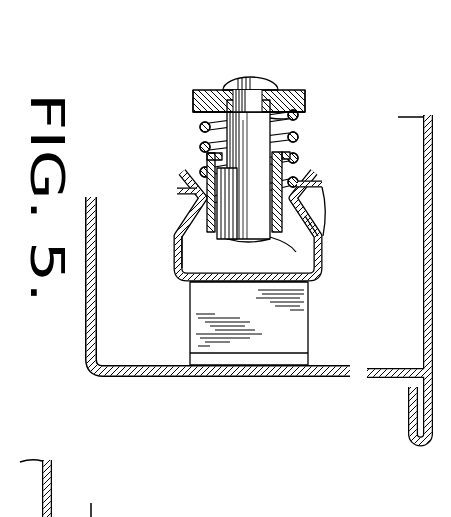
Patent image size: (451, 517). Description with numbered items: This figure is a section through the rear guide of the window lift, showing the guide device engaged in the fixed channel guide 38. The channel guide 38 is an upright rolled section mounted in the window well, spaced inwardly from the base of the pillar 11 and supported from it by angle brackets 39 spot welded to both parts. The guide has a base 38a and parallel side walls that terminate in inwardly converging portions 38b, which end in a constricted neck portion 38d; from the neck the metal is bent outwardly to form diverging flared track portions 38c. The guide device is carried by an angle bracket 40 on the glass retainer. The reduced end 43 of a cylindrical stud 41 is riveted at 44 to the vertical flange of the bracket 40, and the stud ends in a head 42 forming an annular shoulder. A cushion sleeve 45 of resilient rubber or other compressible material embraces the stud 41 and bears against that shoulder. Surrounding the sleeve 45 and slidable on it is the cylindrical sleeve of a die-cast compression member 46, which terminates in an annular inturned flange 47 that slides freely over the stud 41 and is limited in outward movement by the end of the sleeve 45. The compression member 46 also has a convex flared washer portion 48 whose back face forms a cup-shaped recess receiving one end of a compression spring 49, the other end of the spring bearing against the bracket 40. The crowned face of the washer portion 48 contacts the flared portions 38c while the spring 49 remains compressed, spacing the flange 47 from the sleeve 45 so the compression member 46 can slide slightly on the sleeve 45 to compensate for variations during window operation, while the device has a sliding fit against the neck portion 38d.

The pillar 11 is at (278, 377).
The channel guide 38 is at (239, 245).
The base 38a is at (237, 270).
The inwardly converging portions 38b is at (185, 232).
The flared track portions 38c is at (323, 182).
The constricted neck portion 38d is at (196, 200).
The angle bracket 39 is at (306, 333).
The angle bracket 40 is at (305, 96).
The cylindrical stud 41 is at (295, 127).
The head 42 is at (285, 251).
The reduced end 43 is at (277, 96).
The rivet 44 is at (250, 80).
The cushion sleeve 45 is at (207, 216).
The compression member 46 is at (323, 230).
The annular inturned flange 47 is at (200, 150).
The washer portion 48 is at (196, 172).
The compression spring 49 is at (200, 111).